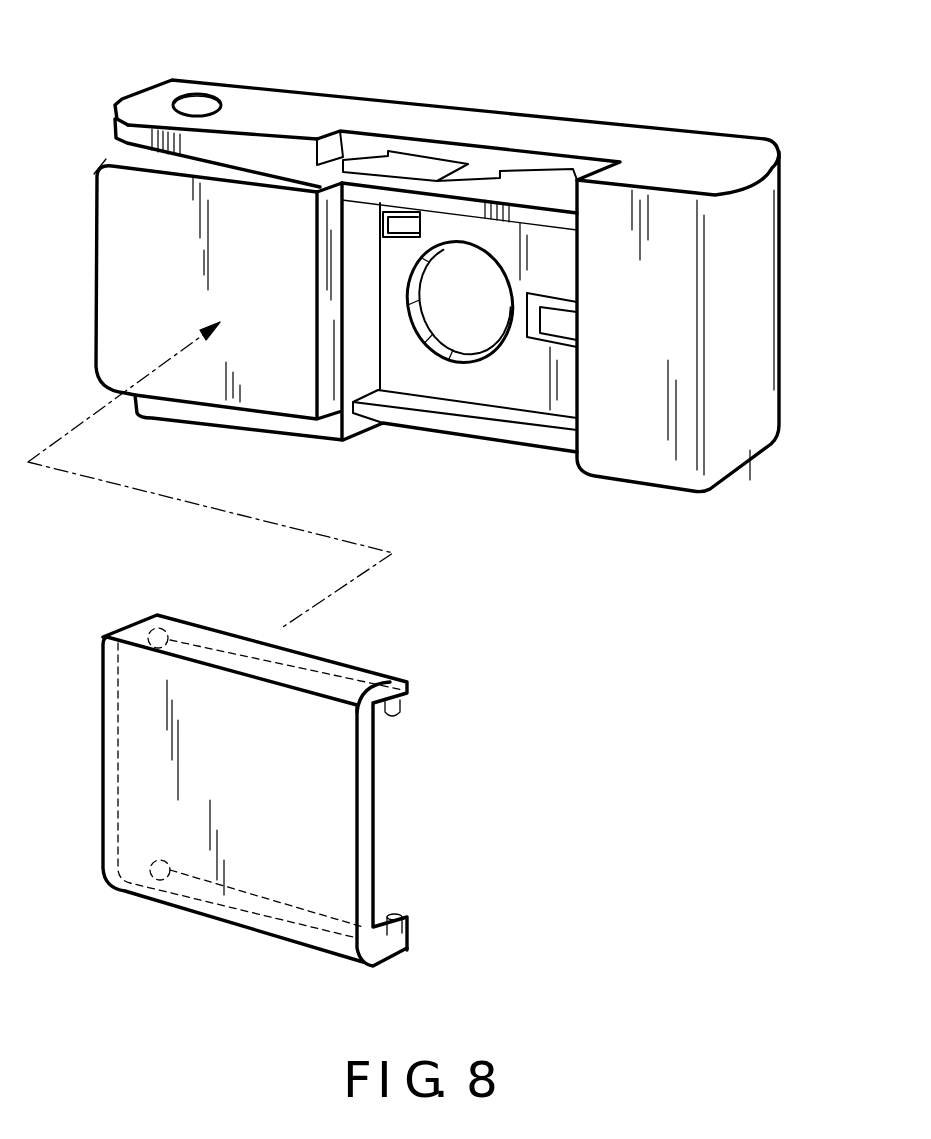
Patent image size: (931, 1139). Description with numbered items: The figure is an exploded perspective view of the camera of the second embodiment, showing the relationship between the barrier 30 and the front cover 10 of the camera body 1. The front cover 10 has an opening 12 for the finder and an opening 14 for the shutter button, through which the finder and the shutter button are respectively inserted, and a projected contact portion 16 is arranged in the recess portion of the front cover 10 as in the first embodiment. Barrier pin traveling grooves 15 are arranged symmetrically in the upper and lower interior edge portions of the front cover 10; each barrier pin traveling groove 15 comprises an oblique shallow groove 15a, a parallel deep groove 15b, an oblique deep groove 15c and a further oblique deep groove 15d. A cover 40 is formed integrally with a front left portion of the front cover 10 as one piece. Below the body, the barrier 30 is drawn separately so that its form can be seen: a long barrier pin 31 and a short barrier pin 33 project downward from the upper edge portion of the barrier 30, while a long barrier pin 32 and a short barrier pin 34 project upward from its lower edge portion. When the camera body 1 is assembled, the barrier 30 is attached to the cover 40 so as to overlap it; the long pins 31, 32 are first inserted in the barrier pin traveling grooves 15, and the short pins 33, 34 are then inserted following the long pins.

The camera body 1 is at (796, 411).
The front cover 10 is at (770, 312).
The opening for the finder 12 is at (397, 222).
The opening for the shutter button 14 is at (200, 95).
The barrier pin traveling groove 15 is at (637, 88).
The oblique groove (shallow groove) 15a is at (378, 155).
The parallel groove (deep groove) 15b is at (283, 142).
The oblique groove (deep groove) 15c is at (468, 165).
The oblique groove (deep groove) 15d is at (500, 160).
The projected contact portion 16 is at (558, 322).
The barrier 30 is at (378, 829).
The barrier pin (long pin) 31 is at (400, 710).
The barrier pin (long pin) 32 is at (403, 922).
The barrier pin (short pin) 33 is at (178, 630).
The barrier pin (short pin) 34 is at (158, 858).
The cover 40 is at (108, 295).